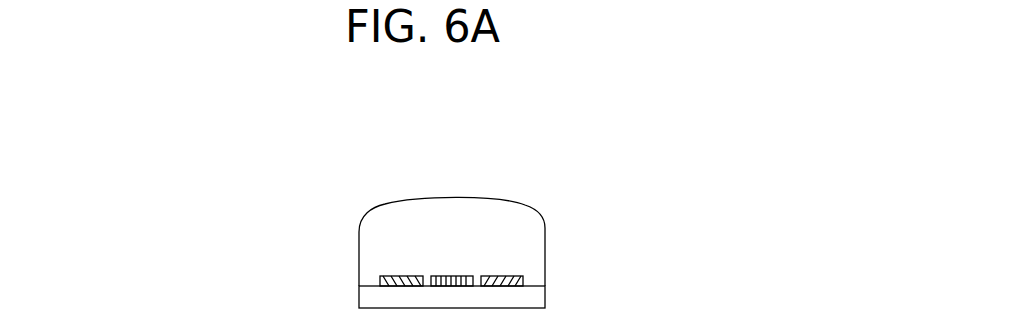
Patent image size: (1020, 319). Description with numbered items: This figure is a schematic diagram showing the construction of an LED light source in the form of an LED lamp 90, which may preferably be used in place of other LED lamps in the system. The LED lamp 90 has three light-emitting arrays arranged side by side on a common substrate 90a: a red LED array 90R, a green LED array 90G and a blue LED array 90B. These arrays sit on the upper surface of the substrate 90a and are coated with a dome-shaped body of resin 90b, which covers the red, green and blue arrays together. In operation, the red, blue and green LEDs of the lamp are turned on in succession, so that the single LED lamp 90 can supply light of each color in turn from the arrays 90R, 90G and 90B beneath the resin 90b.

The LED lamp 90 is at (432, 129).
The red LED array 90R is at (398, 276).
The green LED array 90G is at (448, 276).
The blue LED array 90B is at (503, 276).
The resin 90b is at (373, 263).
The substrate 90a is at (373, 298).